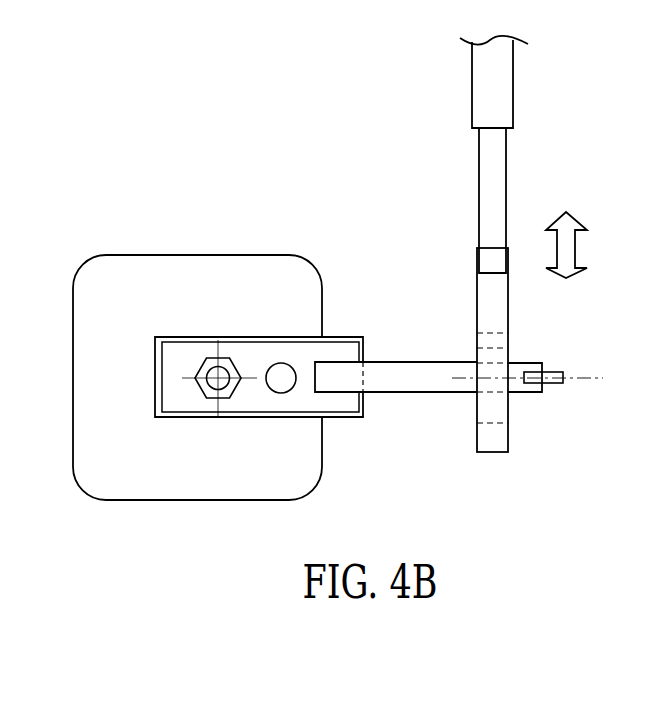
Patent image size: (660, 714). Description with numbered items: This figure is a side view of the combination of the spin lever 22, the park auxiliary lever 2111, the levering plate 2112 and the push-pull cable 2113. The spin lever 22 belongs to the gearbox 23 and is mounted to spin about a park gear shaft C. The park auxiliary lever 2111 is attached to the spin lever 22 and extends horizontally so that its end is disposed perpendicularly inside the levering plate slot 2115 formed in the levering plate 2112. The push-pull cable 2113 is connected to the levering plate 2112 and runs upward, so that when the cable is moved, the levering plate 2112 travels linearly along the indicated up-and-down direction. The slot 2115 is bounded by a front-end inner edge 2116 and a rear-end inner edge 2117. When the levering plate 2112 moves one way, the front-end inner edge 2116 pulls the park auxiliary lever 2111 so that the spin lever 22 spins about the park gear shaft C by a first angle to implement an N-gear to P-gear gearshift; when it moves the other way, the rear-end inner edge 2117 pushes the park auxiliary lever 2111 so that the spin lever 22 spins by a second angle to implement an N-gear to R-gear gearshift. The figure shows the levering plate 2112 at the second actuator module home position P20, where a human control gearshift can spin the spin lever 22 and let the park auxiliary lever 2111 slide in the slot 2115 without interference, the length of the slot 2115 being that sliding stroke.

The spin lever 22 is at (180, 337).
The gearbox 23 is at (202, 270).
The park gear shaft C is at (205, 390).
The park auxiliary lever 2111 is at (418, 383).
The levering plate 2112 is at (488, 447).
The push-pull cable 2113 is at (486, 192).
The levering plate slot 2115 is at (480, 347).
The front-end inner edge 2116 is at (493, 420).
The rear-end inner edge 2117 is at (493, 330).
The second actuator module home position P20 is at (556, 377).